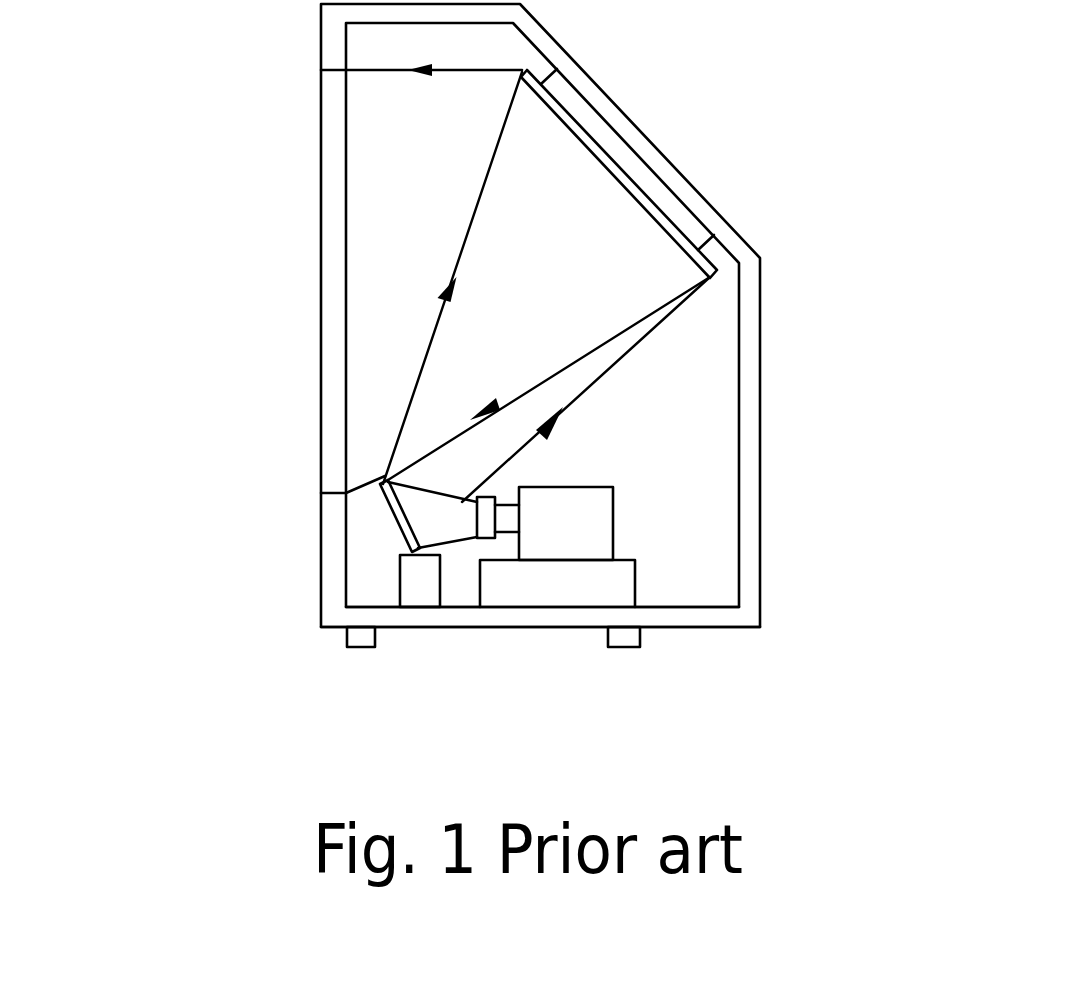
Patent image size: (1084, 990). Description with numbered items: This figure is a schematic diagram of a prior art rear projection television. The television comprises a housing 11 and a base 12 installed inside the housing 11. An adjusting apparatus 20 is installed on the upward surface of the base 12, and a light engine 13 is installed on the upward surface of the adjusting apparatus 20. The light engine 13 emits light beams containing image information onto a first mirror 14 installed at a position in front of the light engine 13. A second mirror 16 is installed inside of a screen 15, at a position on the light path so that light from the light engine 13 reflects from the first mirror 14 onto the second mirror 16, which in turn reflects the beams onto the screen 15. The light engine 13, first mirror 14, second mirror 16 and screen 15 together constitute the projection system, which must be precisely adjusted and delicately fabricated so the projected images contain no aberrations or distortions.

The housing 11 is at (747, 428).
The base 12 is at (453, 620).
The light engine 13 is at (577, 527).
The first mirror 14 is at (396, 520).
The screen 15 is at (330, 207).
The second mirror 16 is at (652, 143).
The adjusting apparatus 20 is at (533, 580).